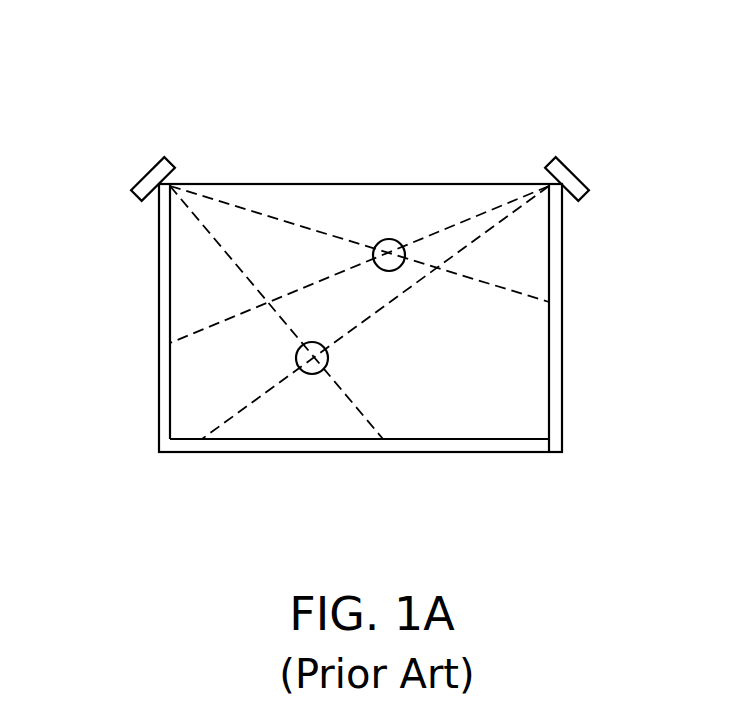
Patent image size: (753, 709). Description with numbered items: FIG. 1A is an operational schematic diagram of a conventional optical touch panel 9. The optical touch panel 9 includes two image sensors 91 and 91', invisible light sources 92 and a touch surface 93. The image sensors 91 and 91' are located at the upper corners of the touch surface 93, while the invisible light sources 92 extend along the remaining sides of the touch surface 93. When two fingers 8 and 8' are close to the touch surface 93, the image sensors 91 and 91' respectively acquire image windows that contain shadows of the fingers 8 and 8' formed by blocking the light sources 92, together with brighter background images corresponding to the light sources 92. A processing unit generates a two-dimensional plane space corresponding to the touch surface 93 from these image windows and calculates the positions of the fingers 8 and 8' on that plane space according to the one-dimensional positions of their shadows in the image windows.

The optical touch panel 9 is at (660, 80).
The image sensor 91 is at (111, 174).
The image sensor 91' is at (607, 158).
The invisible light sources 92 is at (163, 401).
The touch surface 93 is at (318, 213).
The finger 8 is at (309, 438).
The finger 8' is at (399, 198).